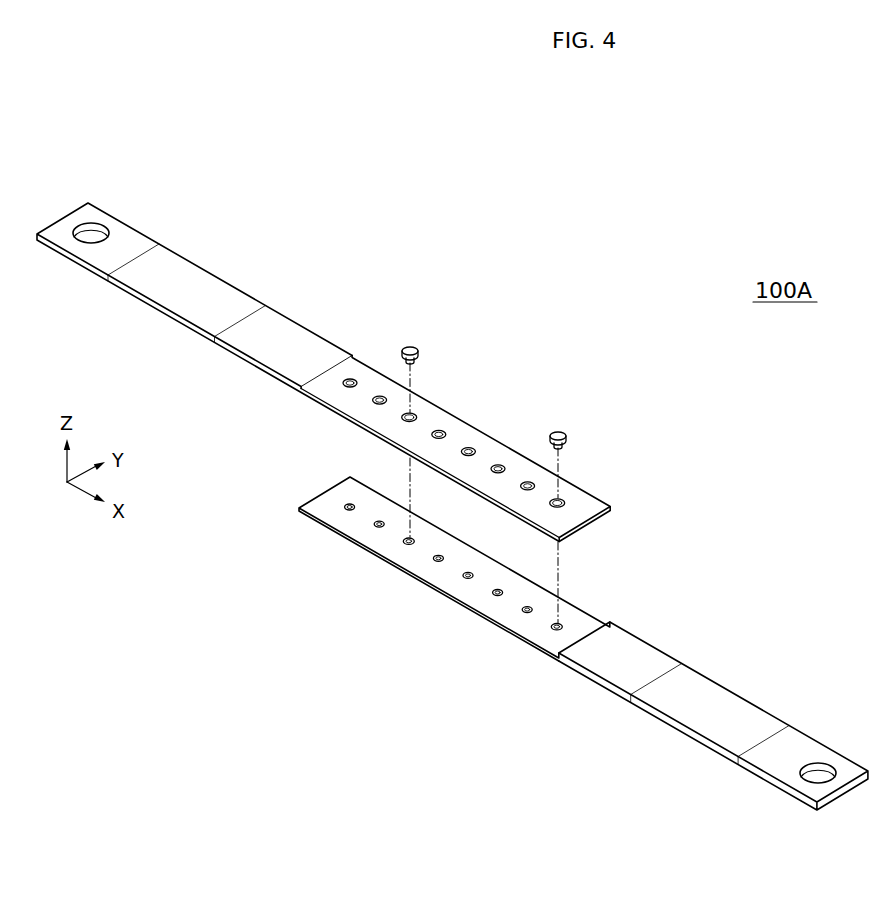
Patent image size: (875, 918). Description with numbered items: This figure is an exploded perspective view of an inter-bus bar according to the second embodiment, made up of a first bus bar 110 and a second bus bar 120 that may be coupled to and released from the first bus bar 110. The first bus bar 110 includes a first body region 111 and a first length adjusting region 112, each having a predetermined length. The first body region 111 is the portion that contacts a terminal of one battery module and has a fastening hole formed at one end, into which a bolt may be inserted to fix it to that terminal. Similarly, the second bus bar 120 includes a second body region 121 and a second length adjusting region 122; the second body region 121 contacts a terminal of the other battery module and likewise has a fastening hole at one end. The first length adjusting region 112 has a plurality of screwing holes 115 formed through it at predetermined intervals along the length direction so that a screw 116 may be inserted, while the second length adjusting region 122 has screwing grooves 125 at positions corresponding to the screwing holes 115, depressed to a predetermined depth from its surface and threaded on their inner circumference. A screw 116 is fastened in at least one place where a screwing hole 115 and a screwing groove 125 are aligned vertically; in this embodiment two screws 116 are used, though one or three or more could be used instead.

The first bus bar 110 is at (323, 285).
The first body region 111 is at (298, 356).
The first length adjusting region 112 is at (499, 453).
The screwing hole 115 is at (415, 414).
The screw 116 is at (412, 347).
The second bus bar 120 is at (715, 609).
The second body region 121 is at (713, 716).
The second length adjusting region 122 is at (470, 595).
The screwing groove 125 is at (407, 542).